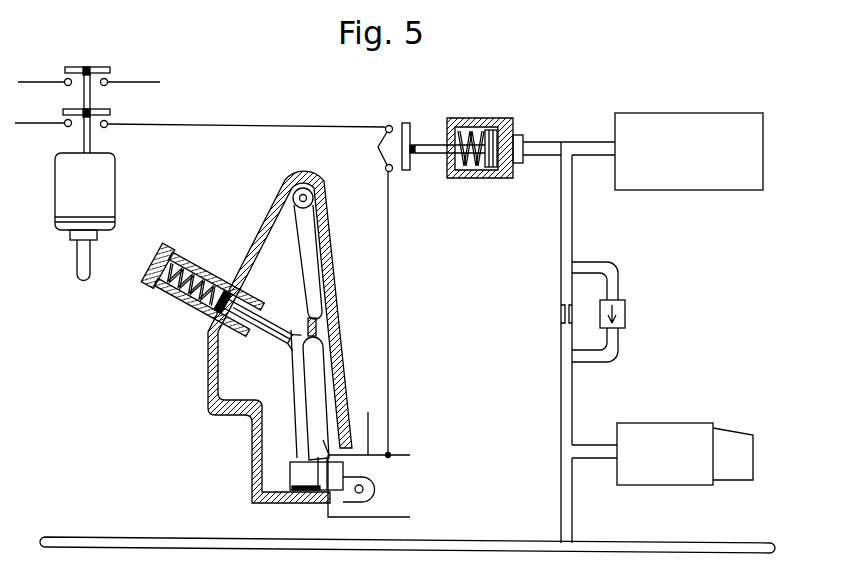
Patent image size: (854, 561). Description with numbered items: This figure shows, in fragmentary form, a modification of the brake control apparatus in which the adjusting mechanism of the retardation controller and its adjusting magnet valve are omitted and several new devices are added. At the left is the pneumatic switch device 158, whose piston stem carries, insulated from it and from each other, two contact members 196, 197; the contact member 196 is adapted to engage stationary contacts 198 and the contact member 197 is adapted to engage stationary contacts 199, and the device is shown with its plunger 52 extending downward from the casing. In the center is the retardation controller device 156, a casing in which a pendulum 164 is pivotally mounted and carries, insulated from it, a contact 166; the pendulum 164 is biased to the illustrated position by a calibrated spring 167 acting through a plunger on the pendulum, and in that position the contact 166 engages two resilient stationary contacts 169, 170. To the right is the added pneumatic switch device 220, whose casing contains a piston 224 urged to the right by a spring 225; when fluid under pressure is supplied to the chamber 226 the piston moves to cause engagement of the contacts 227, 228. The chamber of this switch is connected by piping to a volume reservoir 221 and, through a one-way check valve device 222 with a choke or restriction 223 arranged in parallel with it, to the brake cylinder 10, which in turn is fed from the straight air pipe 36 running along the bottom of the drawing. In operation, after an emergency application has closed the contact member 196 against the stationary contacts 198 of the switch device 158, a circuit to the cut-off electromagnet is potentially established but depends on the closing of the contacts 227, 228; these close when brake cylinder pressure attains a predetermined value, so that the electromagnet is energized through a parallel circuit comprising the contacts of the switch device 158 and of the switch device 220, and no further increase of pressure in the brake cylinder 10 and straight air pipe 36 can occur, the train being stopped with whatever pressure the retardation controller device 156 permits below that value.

The brake cylinder 10 is at (656, 435).
The straight air pipe 36 is at (440, 541).
The solenoid plunger rod 52 is at (82, 260).
The retardation controller device 156 is at (342, 292).
The pneumatic switch device 158 is at (128, 197).
The pendulum 164 is at (302, 372).
The contact 166 is at (317, 470).
The calibrated spring 167 is at (196, 302).
The resilient stationary contact 169 is at (325, 468).
The resilient stationary contact 170 is at (325, 488).
The contact member 196 is at (97, 114).
The contact member 197 is at (93, 73).
The stationary contacts 198 is at (100, 127).
The stationary contacts 199 is at (65, 85).
The pneumatic switch device 220 is at (480, 114).
The volume reservoir 221 is at (658, 130).
The one-way check valve device 222 is at (625, 315).
The choke or restriction 223 is at (566, 309).
The piston 224 is at (498, 130).
The spring 225 is at (472, 168).
The chamber 226 is at (504, 178).
The contact 227 is at (406, 171).
The contact 228 is at (366, 292).